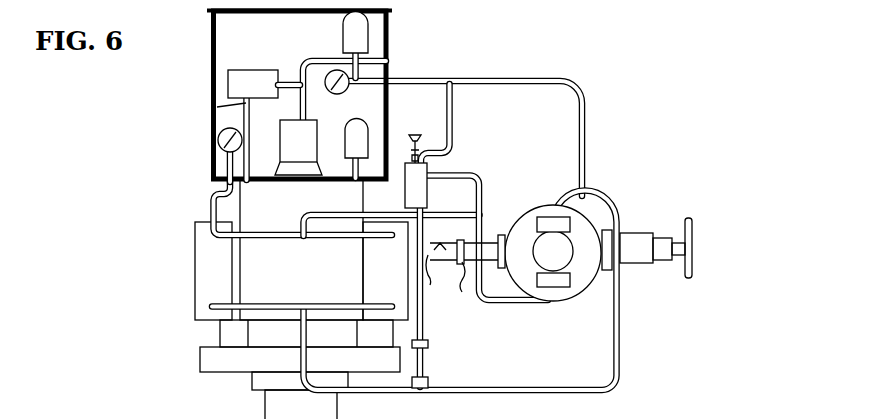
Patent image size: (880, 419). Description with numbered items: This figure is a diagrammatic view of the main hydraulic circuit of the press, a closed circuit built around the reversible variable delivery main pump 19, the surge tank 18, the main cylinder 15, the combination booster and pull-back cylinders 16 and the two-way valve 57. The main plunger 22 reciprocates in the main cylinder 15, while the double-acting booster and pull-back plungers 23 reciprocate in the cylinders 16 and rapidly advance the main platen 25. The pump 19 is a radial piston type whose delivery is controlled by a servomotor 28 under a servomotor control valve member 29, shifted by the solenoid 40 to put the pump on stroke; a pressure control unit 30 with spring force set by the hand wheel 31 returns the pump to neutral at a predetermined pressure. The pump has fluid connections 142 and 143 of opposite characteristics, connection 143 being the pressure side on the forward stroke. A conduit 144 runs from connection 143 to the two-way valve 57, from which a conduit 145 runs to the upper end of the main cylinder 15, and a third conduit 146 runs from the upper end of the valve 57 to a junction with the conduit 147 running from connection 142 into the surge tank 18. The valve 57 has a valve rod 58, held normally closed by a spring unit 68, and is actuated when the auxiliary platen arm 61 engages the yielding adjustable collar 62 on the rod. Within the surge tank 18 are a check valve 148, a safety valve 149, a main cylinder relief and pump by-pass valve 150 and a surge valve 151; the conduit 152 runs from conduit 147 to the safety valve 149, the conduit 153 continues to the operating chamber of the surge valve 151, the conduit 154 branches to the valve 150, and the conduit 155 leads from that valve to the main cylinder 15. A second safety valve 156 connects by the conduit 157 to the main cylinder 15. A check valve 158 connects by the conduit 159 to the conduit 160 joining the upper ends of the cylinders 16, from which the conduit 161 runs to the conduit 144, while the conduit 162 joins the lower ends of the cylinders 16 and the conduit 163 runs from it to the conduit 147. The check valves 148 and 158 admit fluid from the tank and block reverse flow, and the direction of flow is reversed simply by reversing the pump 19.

The main cylinder 15 is at (302, 212).
The booster and pull-back cylinders 16 is at (195, 276).
The surge tank 18 is at (211, 48).
The reversible variable delivery main pump 19 is at (536, 204).
The main plunger 22 is at (264, 335).
The booster and pull-back plungers 23 is at (220, 336).
The main platen 25 is at (300, 359).
The servomotor 28 is at (495, 265).
The servomotor control valve member 29 is at (467, 280).
The pressure control unit 30 is at (638, 265).
The hand wheel 31 is at (693, 226).
The solenoid 40 is at (445, 270).
The two-way valve 57 is at (430, 176).
The valve rod 58 is at (424, 319).
The auxiliary platen arm 61 is at (428, 345).
The yielding adjustable collar 62 is at (428, 382).
The spring unit 68 is at (421, 147).
The fluid connection 142 is at (537, 222).
The fluid connection 143 is at (560, 287).
The conduit 144 is at (496, 301).
The conduit 145 is at (387, 206).
The conduit 146 is at (452, 132).
The conduit 147 is at (533, 80).
The check valve 148 is at (347, 88).
The safety valve 149 is at (348, 42).
The main cylinder relief and pump by-pass valve 150 is at (249, 60).
The surge valve 151 is at (284, 135).
The conduit 152 is at (353, 72).
The conduit 153 is at (326, 60).
The conduit 154 is at (287, 80).
The conduit 155 is at (216, 110).
The safety valve 156 is at (352, 125).
The conduit 157 is at (352, 168).
The check valve 158 is at (218, 139).
The conduit 159 is at (211, 192).
The conduit 160 is at (255, 232).
The conduit 161 is at (335, 213).
The conduit 162 is at (271, 305).
The conduit 163 is at (305, 390).